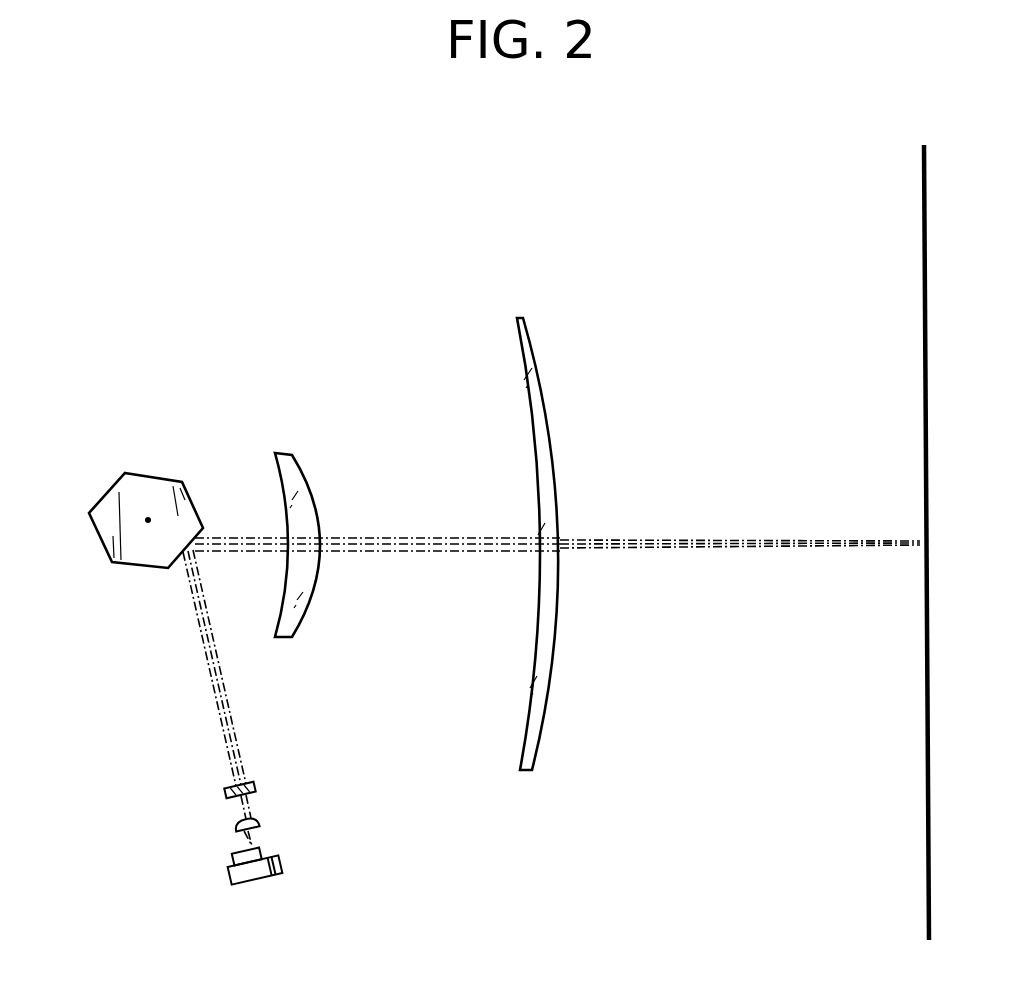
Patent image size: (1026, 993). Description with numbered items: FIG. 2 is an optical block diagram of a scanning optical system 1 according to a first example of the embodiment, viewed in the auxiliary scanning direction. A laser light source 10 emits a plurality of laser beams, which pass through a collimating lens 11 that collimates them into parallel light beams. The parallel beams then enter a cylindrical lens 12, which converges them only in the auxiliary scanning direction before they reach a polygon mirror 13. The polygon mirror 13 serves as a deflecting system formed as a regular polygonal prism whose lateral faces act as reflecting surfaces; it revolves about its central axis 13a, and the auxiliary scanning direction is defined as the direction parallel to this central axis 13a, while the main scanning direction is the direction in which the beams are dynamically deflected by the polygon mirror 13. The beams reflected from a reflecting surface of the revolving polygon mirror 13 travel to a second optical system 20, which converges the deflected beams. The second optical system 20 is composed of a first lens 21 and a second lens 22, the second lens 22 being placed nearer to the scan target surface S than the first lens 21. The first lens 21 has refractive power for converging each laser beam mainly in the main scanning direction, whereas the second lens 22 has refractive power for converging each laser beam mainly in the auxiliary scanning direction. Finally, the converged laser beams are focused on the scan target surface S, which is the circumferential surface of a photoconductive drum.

The scanning optical system 1 is at (101, 340).
The laser light source 10 is at (229, 874).
The collimating lens 11 is at (260, 820).
The cylindrical lens 12 is at (225, 792).
The polygon mirror 13 is at (160, 480).
The central axis 13a is at (148, 523).
The second optical system 20 is at (245, 281).
The first lens 21 is at (297, 463).
The second lens 22 is at (517, 350).
The scan target surface S is at (925, 672).